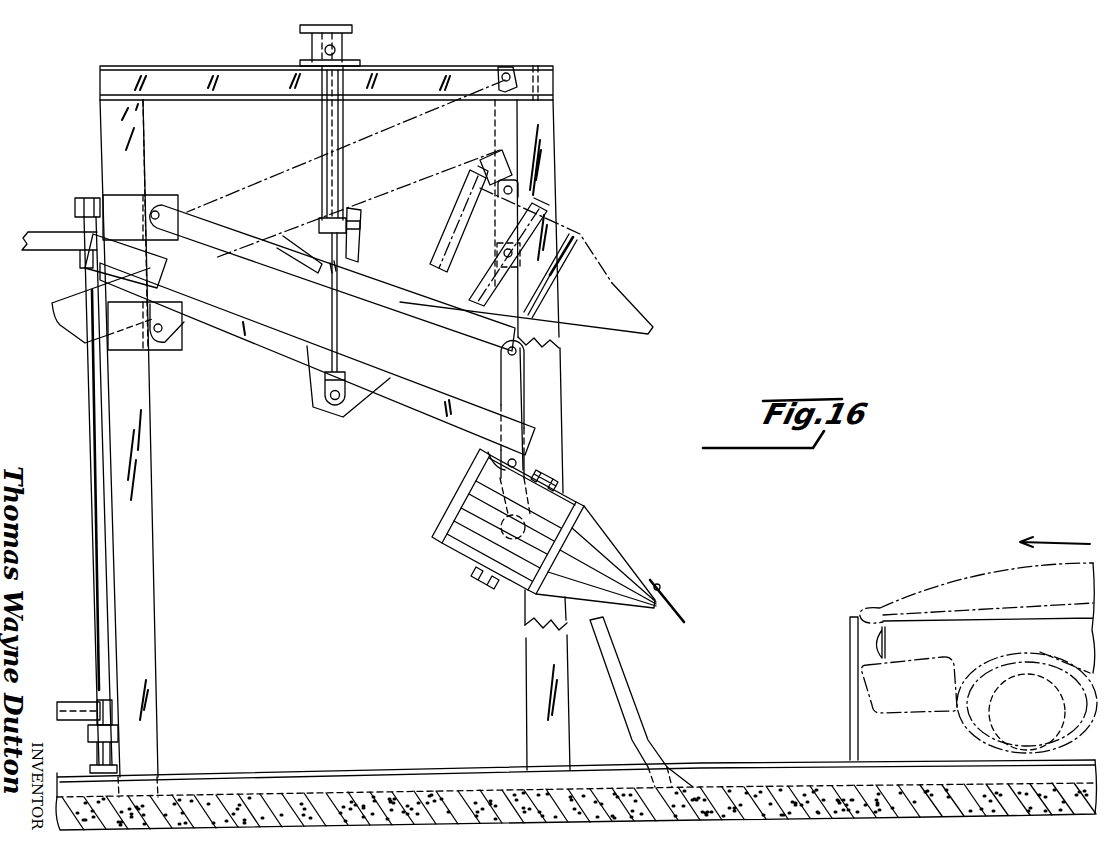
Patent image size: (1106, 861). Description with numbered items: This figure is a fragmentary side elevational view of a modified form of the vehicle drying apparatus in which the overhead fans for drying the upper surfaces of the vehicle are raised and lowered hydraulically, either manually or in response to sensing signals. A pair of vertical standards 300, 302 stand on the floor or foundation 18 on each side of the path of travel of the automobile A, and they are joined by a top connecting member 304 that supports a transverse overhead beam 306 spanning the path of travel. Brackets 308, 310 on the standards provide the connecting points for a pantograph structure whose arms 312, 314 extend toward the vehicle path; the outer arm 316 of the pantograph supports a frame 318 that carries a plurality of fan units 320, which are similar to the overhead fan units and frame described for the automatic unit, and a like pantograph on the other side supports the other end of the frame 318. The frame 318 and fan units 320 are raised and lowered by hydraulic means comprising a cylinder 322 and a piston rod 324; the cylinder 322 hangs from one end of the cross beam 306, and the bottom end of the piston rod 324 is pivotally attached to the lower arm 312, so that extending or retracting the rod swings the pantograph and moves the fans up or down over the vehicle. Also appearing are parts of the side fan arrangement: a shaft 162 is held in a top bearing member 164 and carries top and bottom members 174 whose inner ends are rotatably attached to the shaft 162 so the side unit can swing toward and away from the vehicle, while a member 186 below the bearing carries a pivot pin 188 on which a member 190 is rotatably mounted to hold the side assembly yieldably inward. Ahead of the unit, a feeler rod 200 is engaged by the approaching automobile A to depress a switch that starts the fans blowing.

The floor or foundation 18 is at (721, 785).
The shaft 162 is at (90, 410).
The top bearing member 164 is at (76, 207).
The top and bottom members 174 is at (27, 233).
The member 186 is at (93, 757).
The pivot pin 188 is at (108, 712).
The member 190 is at (68, 702).
The feeler rod 200 is at (851, 727).
The vertical standard 300 is at (140, 490).
The vertical standard 302 is at (560, 409).
The top connecting member 304 is at (460, 64).
The transverse overhead beam 306 is at (353, 44).
The bracket 308 is at (157, 197).
The bracket 310 is at (172, 350).
The lower arm 312 is at (259, 346).
The arm 314 is at (300, 279).
The outer arm 316 is at (502, 373).
The frame 318 is at (556, 477).
The fan unit 320 is at (585, 530).
The cylinder 322 is at (340, 172).
The piston rod 324 is at (339, 318).
The automobile A is at (900, 607).